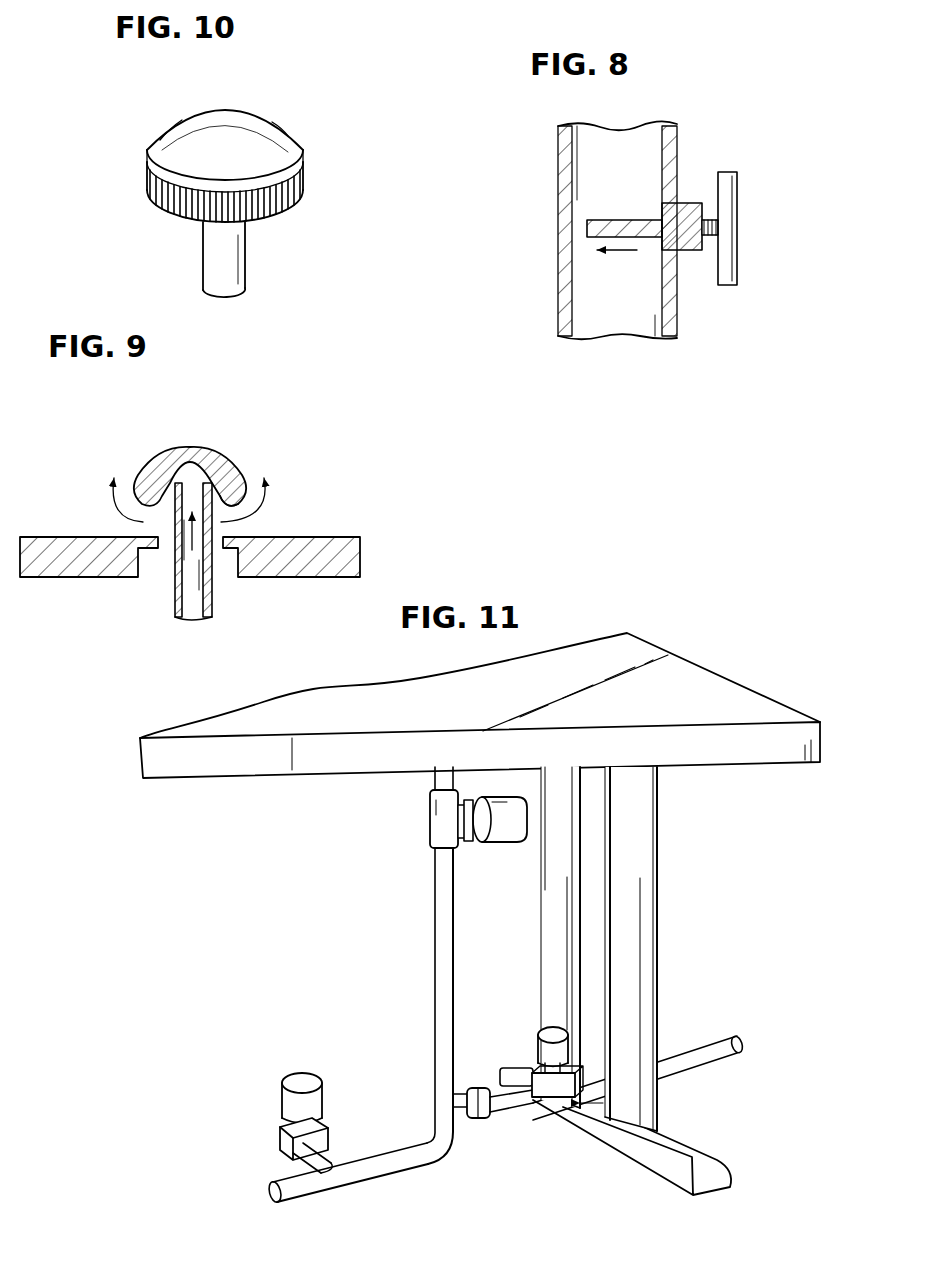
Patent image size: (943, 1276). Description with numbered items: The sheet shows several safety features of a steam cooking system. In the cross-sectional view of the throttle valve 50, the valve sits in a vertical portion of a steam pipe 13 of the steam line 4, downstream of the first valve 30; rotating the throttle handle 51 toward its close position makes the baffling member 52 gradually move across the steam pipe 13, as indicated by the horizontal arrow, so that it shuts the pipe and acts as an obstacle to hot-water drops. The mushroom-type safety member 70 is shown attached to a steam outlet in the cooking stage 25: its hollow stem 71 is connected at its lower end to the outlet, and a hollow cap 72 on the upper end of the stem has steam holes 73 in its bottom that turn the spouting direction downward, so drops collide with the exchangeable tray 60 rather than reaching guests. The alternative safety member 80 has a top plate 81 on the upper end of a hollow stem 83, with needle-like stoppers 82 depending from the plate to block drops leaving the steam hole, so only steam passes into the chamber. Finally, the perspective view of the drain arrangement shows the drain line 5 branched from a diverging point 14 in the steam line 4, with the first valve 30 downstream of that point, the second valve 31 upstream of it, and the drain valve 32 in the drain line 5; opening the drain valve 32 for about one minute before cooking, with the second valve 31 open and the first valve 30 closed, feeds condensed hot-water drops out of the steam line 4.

In FIG. 11, the steam line 4 is at (437, 957).
In FIG. 11, the drain line 5 is at (392, 1168).
In FIG. 8, the steam pipe 13 is at (558, 163).
In FIG. 11, the diverging point 14 is at (450, 1107).
In FIG. 9, the cooking stage 25 is at (67, 548).
In FIG. 11, the first valve 30 is at (508, 828).
In FIG. 11, the second valve 31 is at (553, 1060).
In FIG. 11, the drain valve 32 is at (326, 1120).
In FIG. 8, the throttle valve 50 is at (696, 272).
In FIG. 8, the throttle handle 51 is at (738, 178).
In FIG. 8, the baffling member 52 is at (587, 228).
In FIG. 9, the exchangeable tray 60 is at (290, 540).
In FIG. 9, the mushroom-type safety member 70 is at (207, 451).
In FIG. 9, the hollow stem 71 is at (192, 583).
In FIG. 9, the hollow cap 72 is at (205, 452).
In FIG. 9, the steam hole 73 is at (217, 488).
In FIG. 10, the safety member 80 is at (190, 141).
In FIG. 10, the top plate 81 is at (258, 133).
In FIG. 10, the needle-like stoppers 82 is at (300, 193).
In FIG. 10, the hollow stem 83 is at (245, 234).